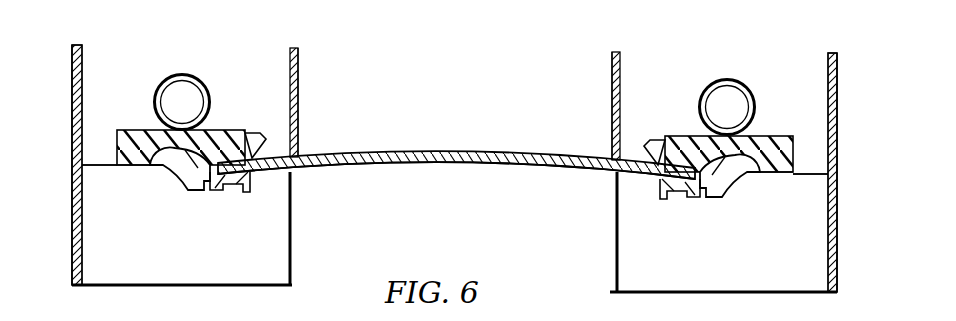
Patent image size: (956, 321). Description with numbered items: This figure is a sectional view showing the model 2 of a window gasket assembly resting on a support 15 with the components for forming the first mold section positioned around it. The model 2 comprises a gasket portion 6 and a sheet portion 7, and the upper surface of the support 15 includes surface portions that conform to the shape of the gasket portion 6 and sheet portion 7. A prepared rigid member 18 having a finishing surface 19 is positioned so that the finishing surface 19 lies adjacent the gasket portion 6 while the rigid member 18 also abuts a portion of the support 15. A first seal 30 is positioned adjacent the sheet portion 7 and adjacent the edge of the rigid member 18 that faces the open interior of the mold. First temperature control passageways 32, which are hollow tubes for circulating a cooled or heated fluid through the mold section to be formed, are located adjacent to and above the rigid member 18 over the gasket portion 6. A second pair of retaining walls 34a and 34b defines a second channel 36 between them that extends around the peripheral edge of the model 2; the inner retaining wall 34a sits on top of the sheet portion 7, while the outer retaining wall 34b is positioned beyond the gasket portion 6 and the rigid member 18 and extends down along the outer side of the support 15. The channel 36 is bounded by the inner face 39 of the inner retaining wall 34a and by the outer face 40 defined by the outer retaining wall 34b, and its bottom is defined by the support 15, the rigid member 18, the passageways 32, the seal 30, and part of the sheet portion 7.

The model 2 is at (381, 149).
The gasket portion 6 is at (170, 167).
The sheet portion 7 is at (398, 166).
The support 15 is at (195, 263).
The rigid member 18 is at (226, 130).
The finishing surface 19 is at (214, 186).
The first seal 30 is at (253, 132).
The first temperature control passageways 32 is at (182, 75).
The inner retaining wall 34a is at (300, 70).
The outer retaining wall 34b is at (72, 170).
The second channel 36 is at (127, 93).
The inner face 39 is at (288, 73).
The outer face 40 is at (83, 73).